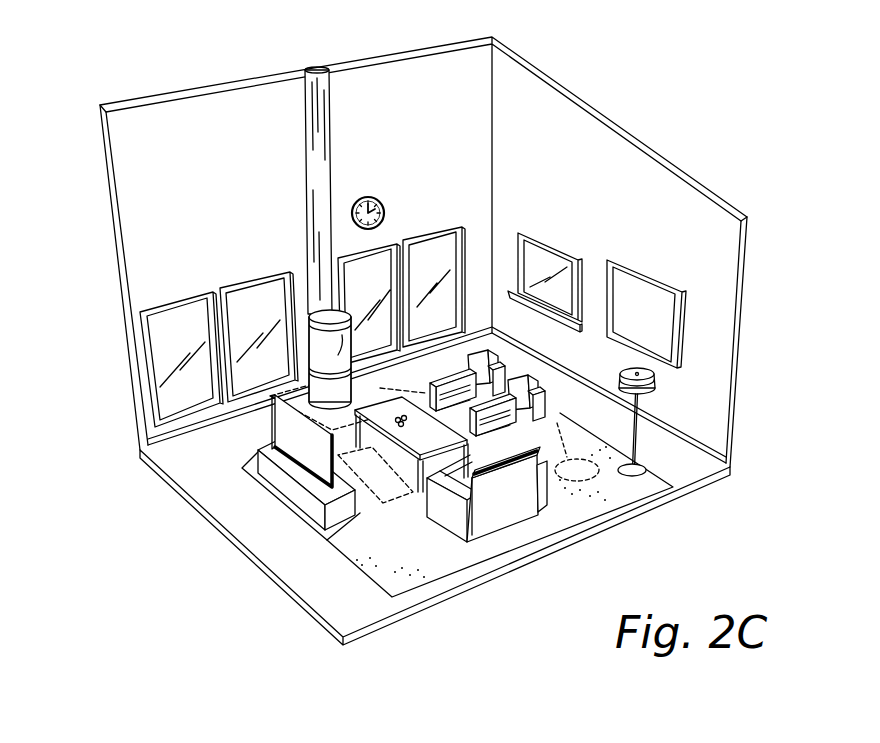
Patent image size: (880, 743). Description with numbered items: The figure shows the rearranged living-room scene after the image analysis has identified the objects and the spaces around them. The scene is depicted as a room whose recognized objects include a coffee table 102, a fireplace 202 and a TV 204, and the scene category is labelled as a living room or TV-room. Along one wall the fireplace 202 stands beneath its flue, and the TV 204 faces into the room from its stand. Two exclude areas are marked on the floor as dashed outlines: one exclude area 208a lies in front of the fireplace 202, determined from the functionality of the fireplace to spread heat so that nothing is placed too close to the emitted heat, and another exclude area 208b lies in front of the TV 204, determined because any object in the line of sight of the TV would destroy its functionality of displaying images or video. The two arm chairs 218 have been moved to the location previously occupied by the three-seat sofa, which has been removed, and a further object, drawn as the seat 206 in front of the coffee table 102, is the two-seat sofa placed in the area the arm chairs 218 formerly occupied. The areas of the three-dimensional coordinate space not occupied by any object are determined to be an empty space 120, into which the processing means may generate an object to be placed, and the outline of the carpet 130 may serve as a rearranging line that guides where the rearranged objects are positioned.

The coffee table 102 is at (398, 410).
The empty space 120 is at (565, 470).
The carpet 130 is at (623, 488).
The fireplace 202 is at (322, 310).
The TV 204 is at (303, 437).
The armchair 206 is at (502, 495).
The exclude area 208a is at (330, 418).
The exclude area 208b is at (383, 487).
The arm chairs 218 is at (500, 412).